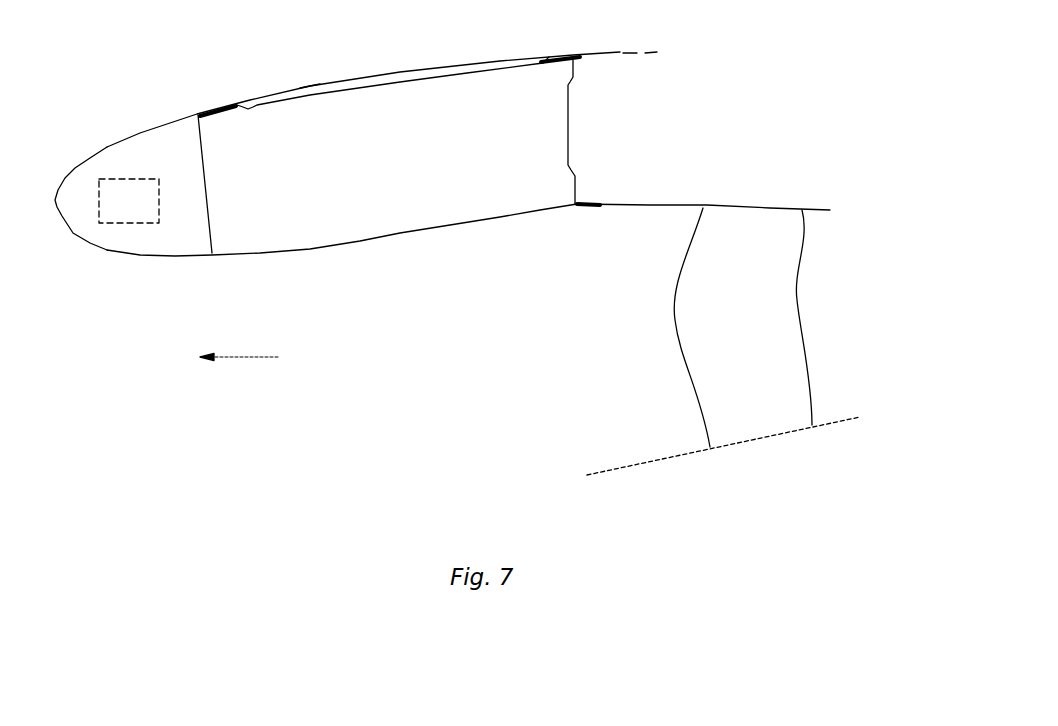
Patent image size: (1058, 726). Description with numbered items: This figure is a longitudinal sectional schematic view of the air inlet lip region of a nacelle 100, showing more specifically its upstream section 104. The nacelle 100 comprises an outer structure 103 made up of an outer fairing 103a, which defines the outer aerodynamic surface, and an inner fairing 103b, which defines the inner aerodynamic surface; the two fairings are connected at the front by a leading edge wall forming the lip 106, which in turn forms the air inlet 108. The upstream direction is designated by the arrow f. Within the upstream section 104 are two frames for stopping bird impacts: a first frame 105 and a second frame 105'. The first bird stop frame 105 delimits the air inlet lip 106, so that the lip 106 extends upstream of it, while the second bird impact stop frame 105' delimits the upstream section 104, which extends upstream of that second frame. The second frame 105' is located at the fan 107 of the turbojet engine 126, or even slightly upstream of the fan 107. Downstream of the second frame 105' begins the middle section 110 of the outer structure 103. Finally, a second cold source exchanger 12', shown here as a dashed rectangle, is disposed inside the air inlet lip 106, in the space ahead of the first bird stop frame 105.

The nacelle 100 is at (128, 55).
The outer structure 103 is at (360, 60).
The outer fairing 103a is at (467, 62).
The inner fairing 103b is at (314, 252).
The upstream section 104 is at (258, 80).
The first frame for stopping bird impacts 105 is at (241, 184).
The second frame for stopping bird impacts 105' is at (610, 131).
The lip 106 is at (98, 152).
The fan 107 is at (698, 308).
The air inlet 108 is at (127, 292).
The middle section 110 is at (640, 38).
The second cold source exchanger 12' is at (142, 182).
The turbojet engine 126 is at (660, 472).
The arrow designating the upstream direction f is at (238, 355).